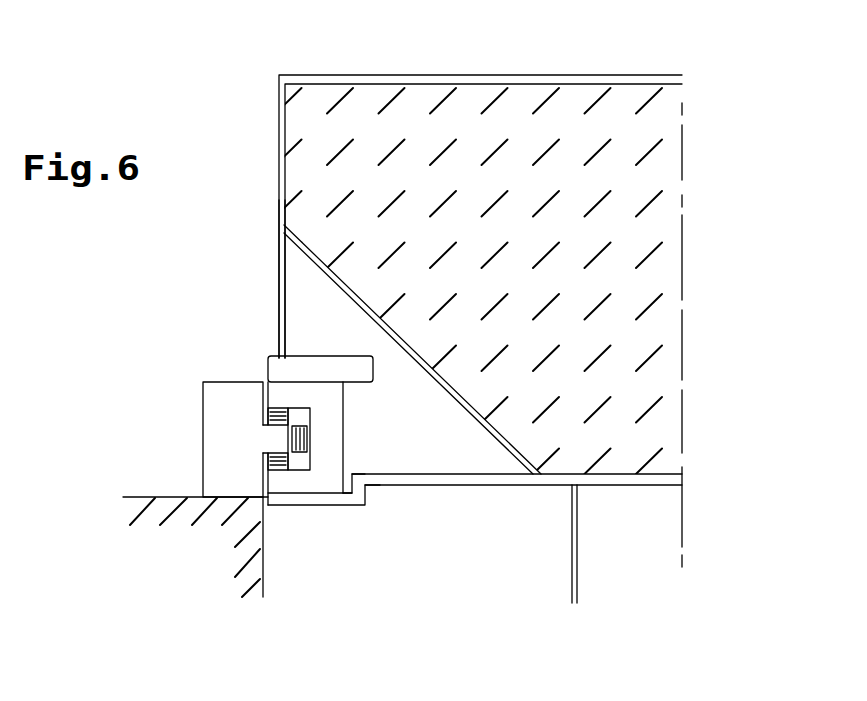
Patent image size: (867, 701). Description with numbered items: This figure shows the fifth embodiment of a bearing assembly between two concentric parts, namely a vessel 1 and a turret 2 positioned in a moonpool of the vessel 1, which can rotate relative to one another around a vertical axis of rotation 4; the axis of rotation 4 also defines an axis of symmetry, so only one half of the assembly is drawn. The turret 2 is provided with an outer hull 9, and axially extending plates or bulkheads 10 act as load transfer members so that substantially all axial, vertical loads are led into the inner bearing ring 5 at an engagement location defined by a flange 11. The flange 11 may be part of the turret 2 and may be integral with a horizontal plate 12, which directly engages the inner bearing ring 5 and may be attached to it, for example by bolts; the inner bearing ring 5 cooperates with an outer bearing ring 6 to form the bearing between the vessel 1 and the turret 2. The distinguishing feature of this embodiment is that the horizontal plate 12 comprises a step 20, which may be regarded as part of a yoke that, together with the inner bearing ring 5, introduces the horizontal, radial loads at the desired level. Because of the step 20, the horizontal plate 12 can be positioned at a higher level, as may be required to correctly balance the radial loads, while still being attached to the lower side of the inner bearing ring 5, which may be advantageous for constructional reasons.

The vessel 1 is at (192, 563).
The turret 2 is at (392, 66).
The vertical axis of rotation 4 is at (683, 527).
The inner bearing ring 5 is at (333, 418).
The outer bearing ring 6 is at (217, 425).
The outer hull 9 is at (279, 262).
The bulkheads 10 is at (512, 113).
The flange 11 is at (318, 368).
The horizontal plate 12 is at (484, 478).
The step 20 is at (364, 495).